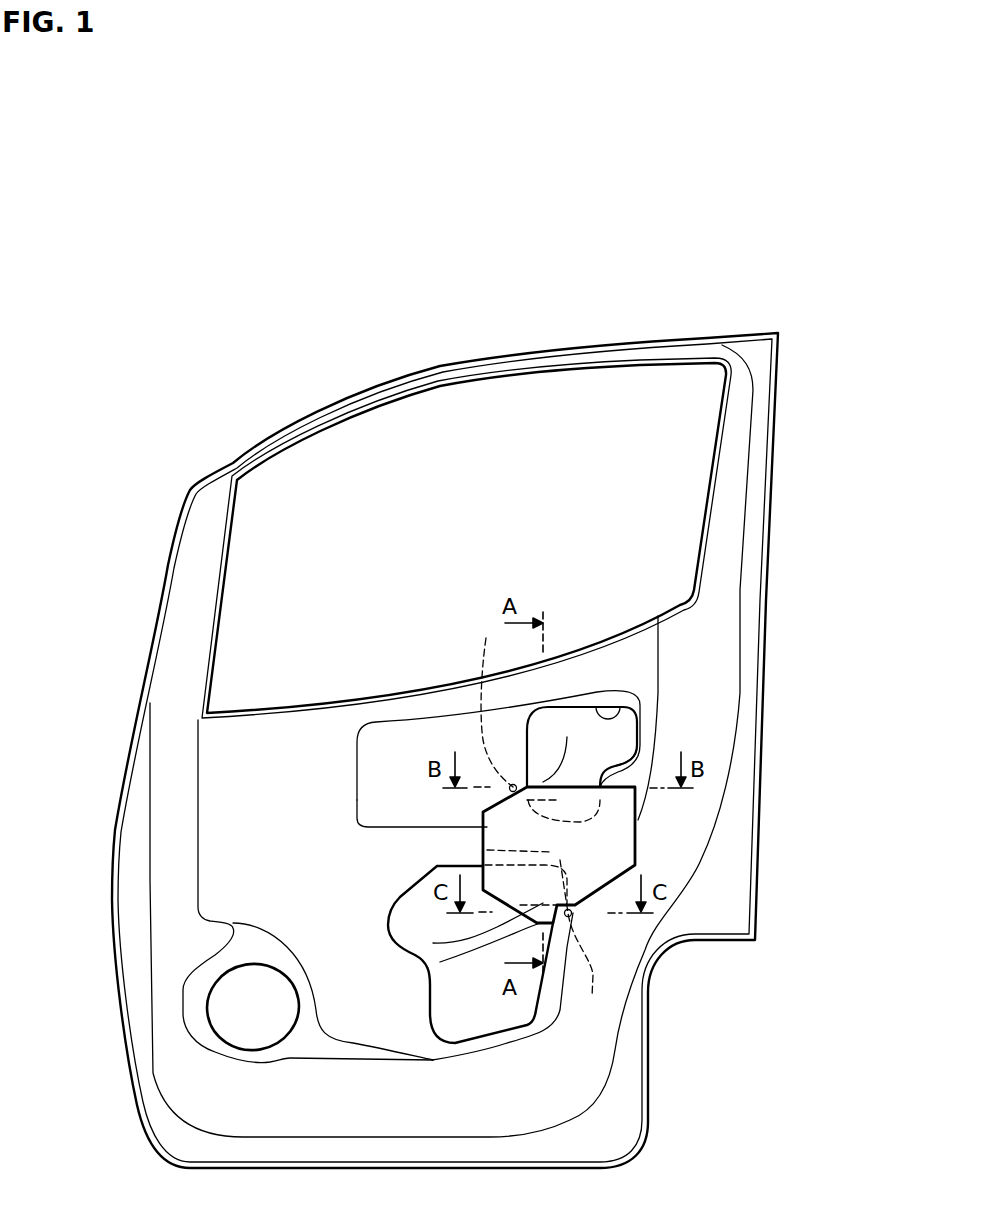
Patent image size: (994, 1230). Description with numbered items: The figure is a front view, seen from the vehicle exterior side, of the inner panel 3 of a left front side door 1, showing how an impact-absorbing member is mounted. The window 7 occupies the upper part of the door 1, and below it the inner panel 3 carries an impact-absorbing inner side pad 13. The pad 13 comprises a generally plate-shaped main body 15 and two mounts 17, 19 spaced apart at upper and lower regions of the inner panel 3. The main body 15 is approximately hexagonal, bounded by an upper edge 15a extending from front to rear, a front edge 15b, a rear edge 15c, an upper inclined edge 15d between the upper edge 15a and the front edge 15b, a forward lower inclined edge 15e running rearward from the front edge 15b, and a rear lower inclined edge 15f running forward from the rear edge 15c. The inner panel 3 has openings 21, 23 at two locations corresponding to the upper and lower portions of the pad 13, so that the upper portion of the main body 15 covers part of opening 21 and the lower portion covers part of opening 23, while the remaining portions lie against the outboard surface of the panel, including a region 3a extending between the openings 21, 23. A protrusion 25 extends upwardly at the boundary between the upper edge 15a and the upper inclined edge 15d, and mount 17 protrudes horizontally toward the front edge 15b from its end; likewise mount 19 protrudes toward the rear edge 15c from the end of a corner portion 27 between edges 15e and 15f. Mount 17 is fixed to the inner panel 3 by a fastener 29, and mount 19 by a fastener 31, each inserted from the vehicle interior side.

The front side door 1 is at (746, 334).
The inner panel 3 is at (763, 757).
The region 3a is at (487, 850).
The window 7 is at (506, 375).
The impact-absorbing inner side pad 13 is at (636, 845).
The main body 15 is at (610, 863).
The upper edge 15a is at (600, 742).
The front edge 15b is at (485, 836).
The rear edge 15c is at (638, 826).
The upper inclined edge 15d is at (483, 806).
The forward lower inclined edge 15e is at (433, 943).
The rear lower inclined edge 15f is at (580, 903).
The mount 17 is at (490, 702).
The mount 19 is at (585, 943).
The opening 21 is at (620, 690).
The opening 23 is at (433, 997).
The protrusion 25 is at (567, 737).
The corner portion 27 is at (440, 962).
The fastener 29 is at (510, 787).
The fastener 31 is at (573, 917).